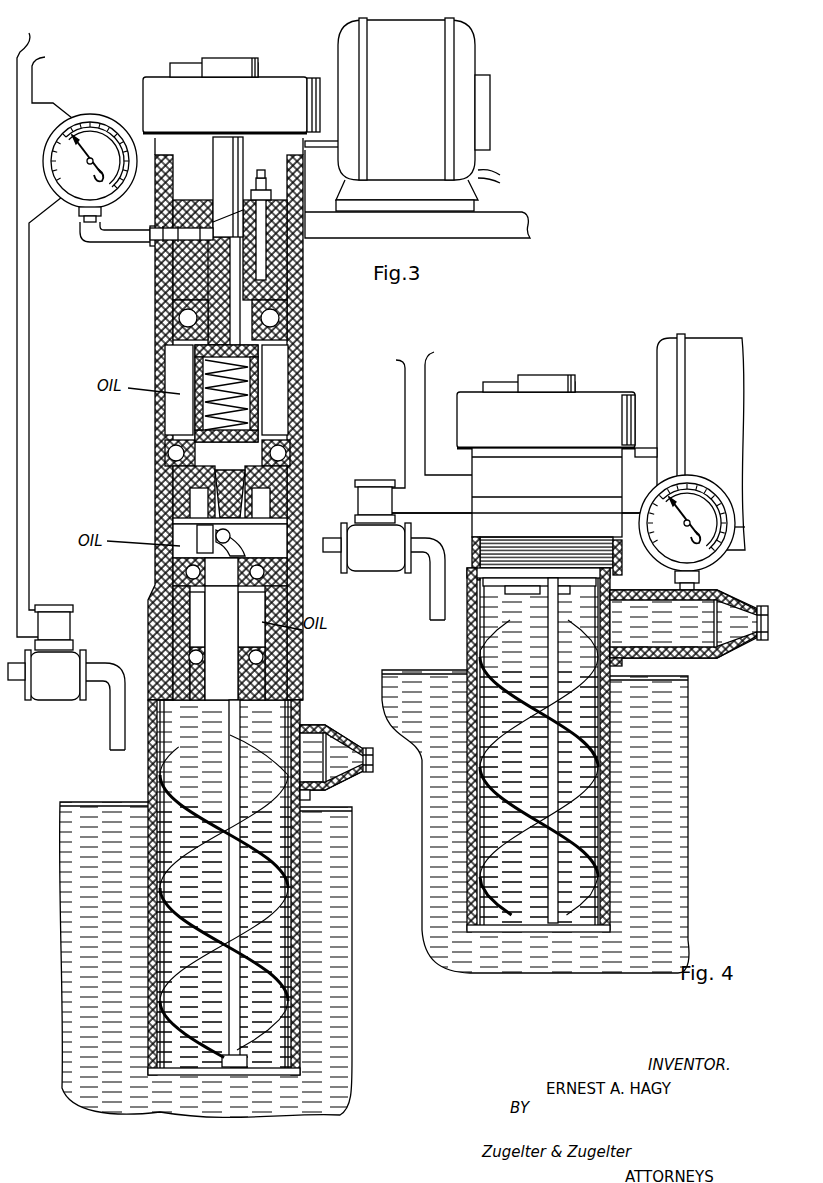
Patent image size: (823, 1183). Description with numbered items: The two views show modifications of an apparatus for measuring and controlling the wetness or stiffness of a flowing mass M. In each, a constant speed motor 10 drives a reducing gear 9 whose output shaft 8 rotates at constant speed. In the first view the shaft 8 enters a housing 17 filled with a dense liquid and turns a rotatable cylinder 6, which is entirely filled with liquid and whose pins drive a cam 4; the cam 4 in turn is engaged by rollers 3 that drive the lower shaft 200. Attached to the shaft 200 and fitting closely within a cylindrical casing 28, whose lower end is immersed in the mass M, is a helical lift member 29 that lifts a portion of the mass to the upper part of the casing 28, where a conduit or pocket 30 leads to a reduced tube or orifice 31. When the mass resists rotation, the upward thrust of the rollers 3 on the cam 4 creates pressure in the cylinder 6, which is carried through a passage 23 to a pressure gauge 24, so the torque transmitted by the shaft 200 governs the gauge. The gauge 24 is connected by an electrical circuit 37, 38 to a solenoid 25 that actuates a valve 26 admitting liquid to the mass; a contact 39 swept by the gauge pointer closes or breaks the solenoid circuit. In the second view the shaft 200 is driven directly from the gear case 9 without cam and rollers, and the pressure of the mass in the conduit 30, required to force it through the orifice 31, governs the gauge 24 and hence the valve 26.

In FIG. 3, the rollers 3 is at (235, 560).
In FIG. 3, the cam 4 is at (200, 533).
In FIG. 3, the rotatable cylinder 6 is at (263, 388).
In FIG. 3, the extending shaft 8 is at (220, 172).
In FIG. 3, the reducing gear 9 is at (268, 85).
In FIG. 4, the reducing gear 9 is at (575, 400).
In FIG. 3, the constant speed motor 10 is at (470, 55).
In FIG. 4, the constant speed motor 10 is at (703, 343).
In FIG. 3, the housing 17 is at (304, 417).
In FIG. 3, the passage 23 is at (185, 238).
In FIG. 3, the pressure gauge 24 is at (85, 133).
In FIG. 4, the pressure gauge 24 is at (688, 482).
In FIG. 3, the solenoid 25 is at (75, 623).
In FIG. 4, the solenoid 25 is at (362, 498).
In FIG. 3, the valve 26 is at (62, 697).
In FIG. 4, the valve 26 is at (380, 577).
In FIG. 3, the cylindrical casing 28 is at (153, 778).
In FIG. 4, the cylindrical casing 28 is at (467, 817).
In FIG. 3, the helical lift member 29 is at (165, 888).
In FIG. 4, the helical lift member 29 is at (480, 857).
In FIG. 3, the conduit or pocket 30 is at (330, 788).
In FIG. 3, the reduced tube or orifice 31 is at (375, 760).
In FIG. 4, the reduced tube or orifice 31 is at (757, 638).
In FIG. 3, the electrical circuit 37 is at (23, 326).
In FIG. 4, the electrical circuit 37 is at (386, 419).
In FIG. 3, the electrical circuit 38 is at (50, 325).
In FIG. 4, the electrical circuit 38 is at (516, 424).
In FIG. 3, the electrical contact 39 is at (96, 133).
In FIG. 4, the electrical contact 39 is at (712, 510).
In FIG. 3, the shaft 200 is at (228, 760).
In FIG. 4, the shaft 200 is at (530, 622).
In FIG. 3, the mass M is at (68, 835).
In FIG. 4, the mass M is at (660, 770).